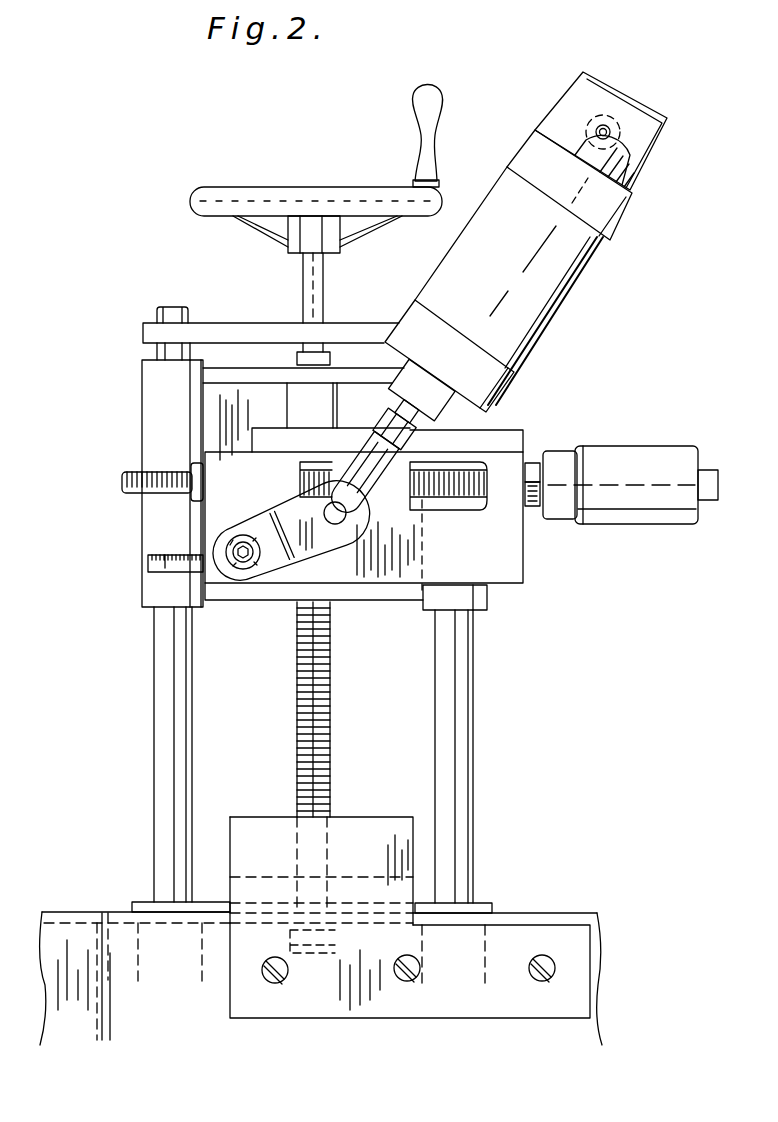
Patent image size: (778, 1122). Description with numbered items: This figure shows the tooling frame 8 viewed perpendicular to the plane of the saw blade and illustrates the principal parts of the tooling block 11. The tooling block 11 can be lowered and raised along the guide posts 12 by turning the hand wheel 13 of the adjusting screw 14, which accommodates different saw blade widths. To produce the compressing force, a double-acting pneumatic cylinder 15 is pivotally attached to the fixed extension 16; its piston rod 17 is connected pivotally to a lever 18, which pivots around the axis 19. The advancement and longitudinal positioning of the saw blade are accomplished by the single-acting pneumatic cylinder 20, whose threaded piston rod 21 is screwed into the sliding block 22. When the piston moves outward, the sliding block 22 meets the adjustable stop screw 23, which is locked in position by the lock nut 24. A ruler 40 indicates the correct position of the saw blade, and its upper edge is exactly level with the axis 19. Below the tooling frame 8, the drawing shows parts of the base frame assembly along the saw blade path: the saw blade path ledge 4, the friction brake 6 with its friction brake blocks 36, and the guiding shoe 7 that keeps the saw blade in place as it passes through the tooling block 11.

The saw blade path ledge 4 is at (127, 953).
The friction brake 6 is at (403, 890).
The guiding shoe 7 is at (145, 902).
The tooling frame 8 is at (218, 405).
The tooling block 11 is at (508, 572).
The guide posts 12 is at (162, 642).
The hand wheel 13 is at (293, 193).
The adjusting screw 14 is at (308, 278).
The double-acting pneumatic cylinder 15 is at (552, 263).
The fixed extension 16 is at (648, 137).
The piston rod 17 is at (402, 412).
The lever 18 is at (296, 562).
The axis 19 is at (250, 573).
The single-acting pneumatic cylinder 20 is at (642, 457).
The threaded piston rod 21 is at (487, 473).
The sliding block 22 is at (397, 493).
The adjustable stop screw 23 is at (157, 494).
The lock nut 24 is at (192, 503).
The friction brake blocks 36 is at (375, 835).
The ruler 40 is at (165, 568).